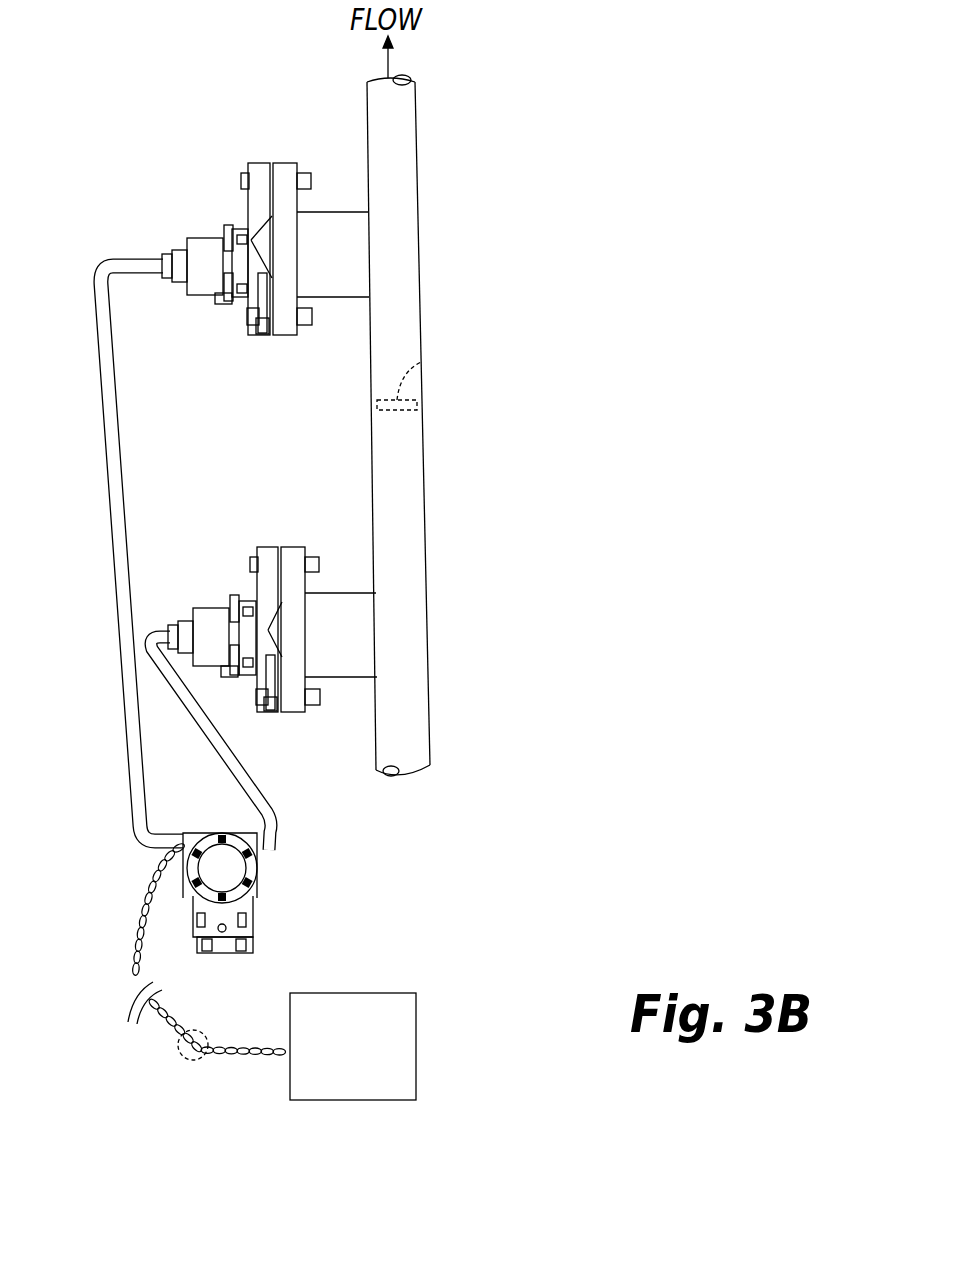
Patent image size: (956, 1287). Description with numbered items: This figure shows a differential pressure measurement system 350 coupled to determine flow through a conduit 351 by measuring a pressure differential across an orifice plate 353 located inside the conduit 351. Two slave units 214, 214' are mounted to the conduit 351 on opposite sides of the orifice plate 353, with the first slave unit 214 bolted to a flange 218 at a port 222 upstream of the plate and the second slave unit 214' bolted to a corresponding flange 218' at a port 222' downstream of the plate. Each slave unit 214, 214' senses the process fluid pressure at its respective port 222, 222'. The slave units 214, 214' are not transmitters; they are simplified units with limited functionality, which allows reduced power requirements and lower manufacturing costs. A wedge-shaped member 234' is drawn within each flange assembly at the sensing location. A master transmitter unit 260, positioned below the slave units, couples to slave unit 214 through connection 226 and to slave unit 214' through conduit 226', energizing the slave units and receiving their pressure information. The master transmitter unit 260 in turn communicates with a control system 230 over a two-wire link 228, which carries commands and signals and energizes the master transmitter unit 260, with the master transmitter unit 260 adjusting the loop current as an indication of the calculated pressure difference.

The differential pressure measurement system 350 is at (151, 96).
The conduit 351 is at (420, 243).
The orifice plate 353 is at (424, 362).
The flange 218 is at (267, 218).
The flange 218' is at (290, 597).
The port 222 is at (333, 209).
The port 222' is at (341, 657).
The slave unit 214 is at (205, 304).
The slave unit 214' is at (212, 662).
The wedge / isolation member 234' is at (312, 436).
The connection 226 is at (145, 553).
The conduit 226' is at (249, 743).
The master transmitter unit 260 is at (264, 866).
The two-wire link 228 is at (206, 1022).
The control system 230 is at (370, 1055).